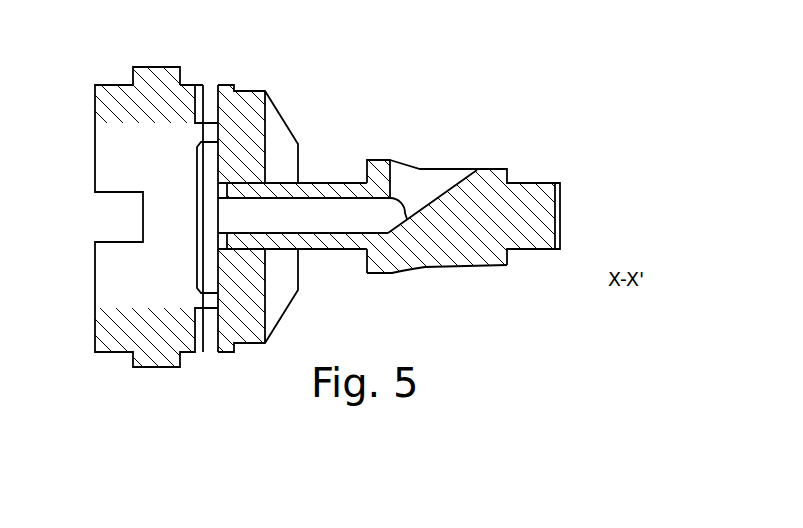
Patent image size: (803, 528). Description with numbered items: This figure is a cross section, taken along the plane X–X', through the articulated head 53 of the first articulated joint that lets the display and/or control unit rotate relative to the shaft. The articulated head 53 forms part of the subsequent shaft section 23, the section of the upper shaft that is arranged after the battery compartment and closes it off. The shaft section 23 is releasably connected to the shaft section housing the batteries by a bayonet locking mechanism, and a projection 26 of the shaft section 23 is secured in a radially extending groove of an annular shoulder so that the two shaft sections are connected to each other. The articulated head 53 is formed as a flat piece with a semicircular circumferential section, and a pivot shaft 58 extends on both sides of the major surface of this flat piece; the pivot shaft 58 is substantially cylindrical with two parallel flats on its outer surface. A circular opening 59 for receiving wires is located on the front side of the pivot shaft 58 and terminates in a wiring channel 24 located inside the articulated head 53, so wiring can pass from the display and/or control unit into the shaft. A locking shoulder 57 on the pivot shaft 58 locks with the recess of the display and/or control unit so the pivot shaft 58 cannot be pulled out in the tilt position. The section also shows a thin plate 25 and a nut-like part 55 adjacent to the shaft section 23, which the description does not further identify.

The subsequent shaft section 23 is at (115, 85).
The projection 26 is at (150, 52).
The plate / sleeve 25 is at (208, 88).
The nut 55 is at (288, 132).
The wiring channel 24 is at (331, 203).
The articulated head 53 is at (473, 220).
The locking shoulder 57 is at (382, 150).
The circular opening 59 is at (428, 169).
The pivot shaft 58 is at (430, 282).